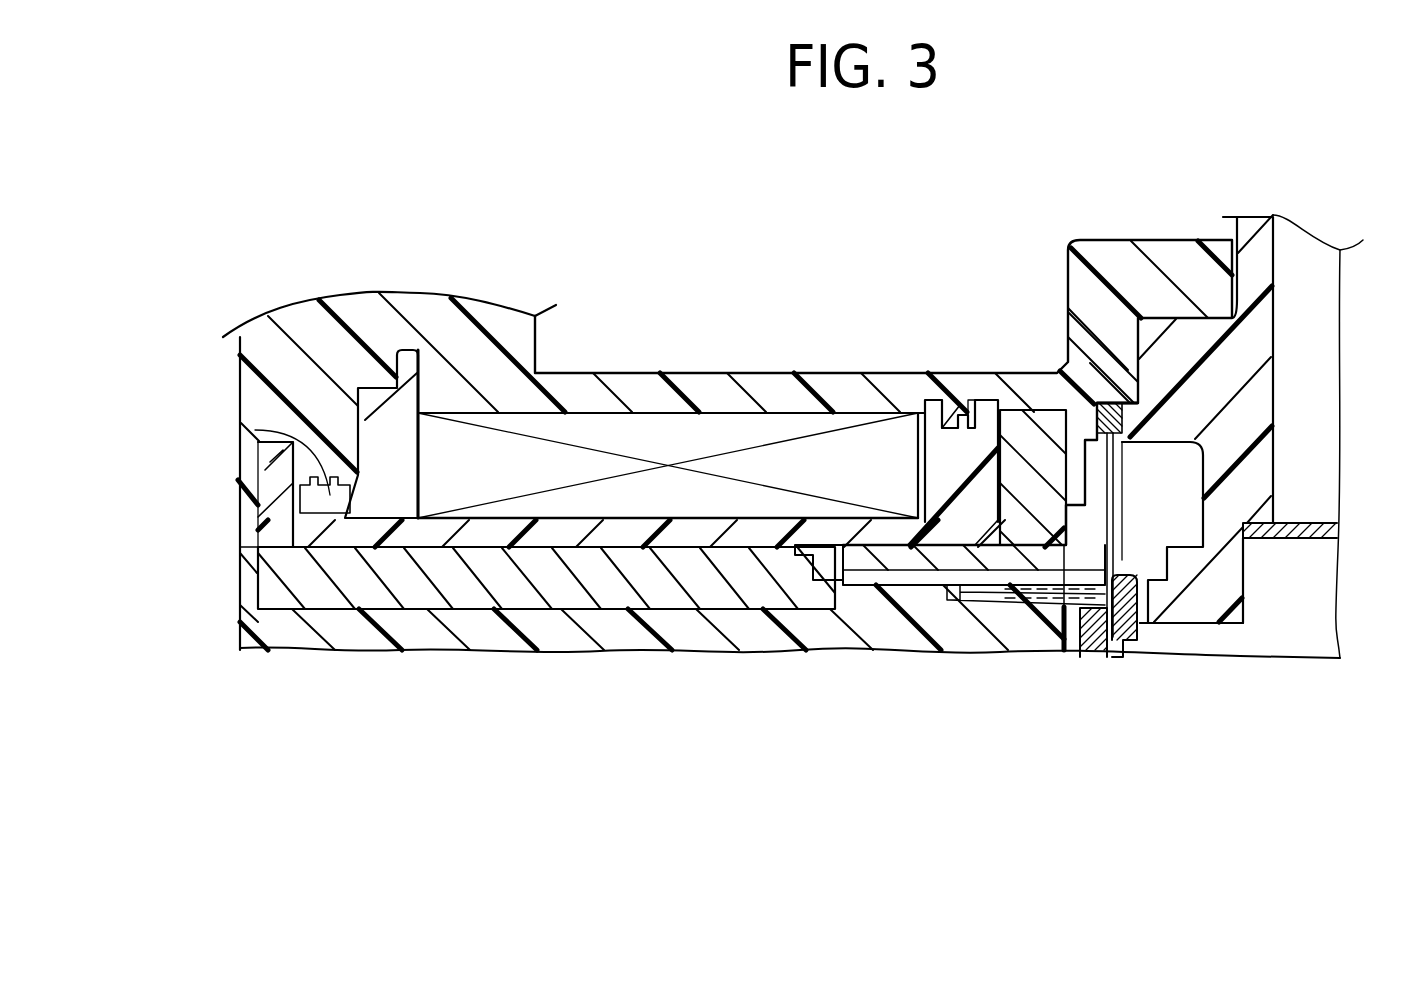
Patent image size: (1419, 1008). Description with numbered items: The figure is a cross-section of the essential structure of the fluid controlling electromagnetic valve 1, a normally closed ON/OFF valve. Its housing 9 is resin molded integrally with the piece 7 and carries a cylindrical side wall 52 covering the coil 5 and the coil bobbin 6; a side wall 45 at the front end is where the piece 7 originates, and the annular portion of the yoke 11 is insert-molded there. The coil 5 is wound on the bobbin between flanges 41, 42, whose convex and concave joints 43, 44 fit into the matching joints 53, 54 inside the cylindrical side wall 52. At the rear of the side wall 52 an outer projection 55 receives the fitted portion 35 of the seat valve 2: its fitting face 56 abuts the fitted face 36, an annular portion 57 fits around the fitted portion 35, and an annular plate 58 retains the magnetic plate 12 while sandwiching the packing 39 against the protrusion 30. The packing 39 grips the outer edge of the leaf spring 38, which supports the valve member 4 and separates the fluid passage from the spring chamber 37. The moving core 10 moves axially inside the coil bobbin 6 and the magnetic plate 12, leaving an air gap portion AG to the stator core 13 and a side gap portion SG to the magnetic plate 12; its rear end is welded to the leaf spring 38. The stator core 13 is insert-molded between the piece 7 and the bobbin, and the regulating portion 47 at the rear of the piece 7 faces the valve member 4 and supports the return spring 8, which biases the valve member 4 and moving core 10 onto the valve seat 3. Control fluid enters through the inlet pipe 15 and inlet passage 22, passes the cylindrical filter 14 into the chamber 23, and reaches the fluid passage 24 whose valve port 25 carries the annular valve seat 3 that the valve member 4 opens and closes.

The fluid controlling electromagnetic valve 1 is at (383, 146).
The seat valve 2 is at (1180, 617).
The valve seat 3 is at (1120, 605).
The valve member 4 is at (1091, 658).
The coil 5 is at (690, 430).
The coil bobbin 6 is at (760, 525).
The piece 7 is at (695, 640).
The return spring 8 is at (953, 590).
The housing 9 is at (297, 318).
The moving core 10 is at (874, 555).
The yoke 11 is at (275, 462).
The magnetic plate 12 is at (1027, 425).
The stator core 13 is at (580, 597).
The filter 14 is at (1310, 520).
The inlet pipe 15 is at (1250, 222).
The inlet passage 22 is at (1167, 358).
The chamber 23 is at (1323, 593).
The fluid passage 24 is at (1220, 640).
The valve port 25 is at (1142, 627).
The protrusion 30 is at (1130, 444).
The fitted portion 35 is at (1318, 372).
The fitted face 36 is at (1070, 282).
The spring chamber 37 is at (910, 575).
The leaf spring 38 is at (1120, 508).
The packing 39 is at (1127, 412).
The flange 41 is at (375, 405).
The flange 42 is at (938, 455).
The convex and concave joint 43 is at (275, 437).
The convex and concave joint 44 is at (965, 420).
The side wall 45 is at (250, 578).
The regulating portion 47 is at (982, 643).
The cylindrical side wall 52 is at (600, 395).
The convex and concave joint 53 is at (307, 517).
The convex and concave joint 54 is at (985, 430).
The outer projection 55 is at (1093, 278).
The fitting face 56 is at (1140, 338).
The annular portion 57 is at (1225, 240).
The annular plate 58 is at (1060, 595).
The air gap portion AG is at (822, 570).
The side gap portion SG is at (1027, 592).